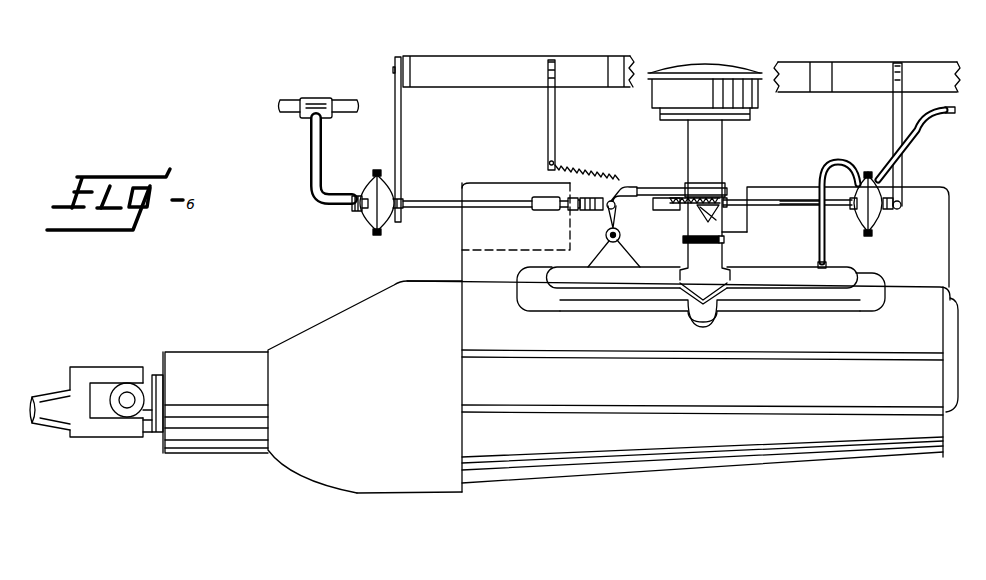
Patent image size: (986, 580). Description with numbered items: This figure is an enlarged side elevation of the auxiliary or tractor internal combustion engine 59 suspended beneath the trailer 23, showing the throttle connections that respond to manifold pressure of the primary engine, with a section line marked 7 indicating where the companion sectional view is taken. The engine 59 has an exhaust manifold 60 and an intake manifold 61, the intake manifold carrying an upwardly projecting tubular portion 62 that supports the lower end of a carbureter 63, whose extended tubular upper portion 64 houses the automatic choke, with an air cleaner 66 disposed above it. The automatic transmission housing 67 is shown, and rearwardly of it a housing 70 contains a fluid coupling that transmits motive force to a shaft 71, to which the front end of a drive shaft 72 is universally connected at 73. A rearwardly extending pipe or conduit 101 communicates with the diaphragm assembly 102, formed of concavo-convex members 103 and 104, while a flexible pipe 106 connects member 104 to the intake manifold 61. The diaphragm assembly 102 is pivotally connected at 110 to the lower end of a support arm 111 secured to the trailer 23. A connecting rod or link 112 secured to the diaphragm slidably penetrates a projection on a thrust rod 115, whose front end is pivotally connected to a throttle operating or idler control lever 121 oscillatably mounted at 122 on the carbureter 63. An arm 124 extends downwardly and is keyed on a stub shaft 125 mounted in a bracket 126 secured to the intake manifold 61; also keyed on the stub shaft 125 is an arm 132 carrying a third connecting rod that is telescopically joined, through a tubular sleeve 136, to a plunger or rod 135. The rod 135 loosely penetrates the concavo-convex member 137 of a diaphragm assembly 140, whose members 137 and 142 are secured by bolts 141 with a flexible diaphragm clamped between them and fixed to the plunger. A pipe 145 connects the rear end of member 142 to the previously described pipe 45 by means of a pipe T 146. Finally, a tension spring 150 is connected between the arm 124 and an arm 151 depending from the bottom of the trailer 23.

The section line 7- 7 is at (462, 253).
The trailer 23 is at (490, 62).
The pipe or conduit 45 is at (337, 98).
The auxiliary internal combustion engine 59 is at (768, 462).
The exhaust manifold 60 is at (766, 304).
The intake manifold 61 is at (846, 273).
The upwardly projecting tubular portion 62 is at (730, 257).
The carbureter 63 is at (727, 240).
The extended tubular upper portion 64 is at (725, 141).
The air cleaner 66 is at (762, 100).
The automatic transmission housing 67 is at (333, 320).
The fluid coupling housing 70 is at (203, 352).
The shaft 71 is at (158, 374).
The drive shaft 72 is at (48, 393).
The universal connection 73 is at (127, 402).
The pipe or conduit 101 is at (905, 160).
The diaphragm assembly 102 is at (878, 225).
The concavo-convex member 103 is at (888, 215).
The concavo-convex member 104 is at (856, 223).
The flexible pipe or conduit 106 is at (839, 162).
The pivotal connection 110 is at (903, 204).
The support arm 111 is at (907, 137).
The connecting rod or link 112 is at (800, 210).
The thrust rod or second connecting rod 115 is at (666, 188).
The throttle operating or idler control lever 121 is at (730, 206).
The pivot point 122 is at (705, 215).
The arm 124 is at (620, 208).
The stub shaft 125 is at (619, 240).
The bracket 126 is at (632, 254).
The arm 132 is at (606, 230).
The plunger or rod 135 is at (437, 199).
The tubular member or sleeve 136 is at (543, 197).
The concavo-convex member 137 is at (392, 218).
The diaphragm assembly or housing 140 is at (360, 215).
The bolts 141 is at (371, 231).
The concavo-convex member 142 is at (365, 183).
The pipe or conduit 145 is at (322, 147).
The pipe T 146 is at (305, 112).
The tension spring 150 is at (575, 171).
The arm 151 is at (552, 100).